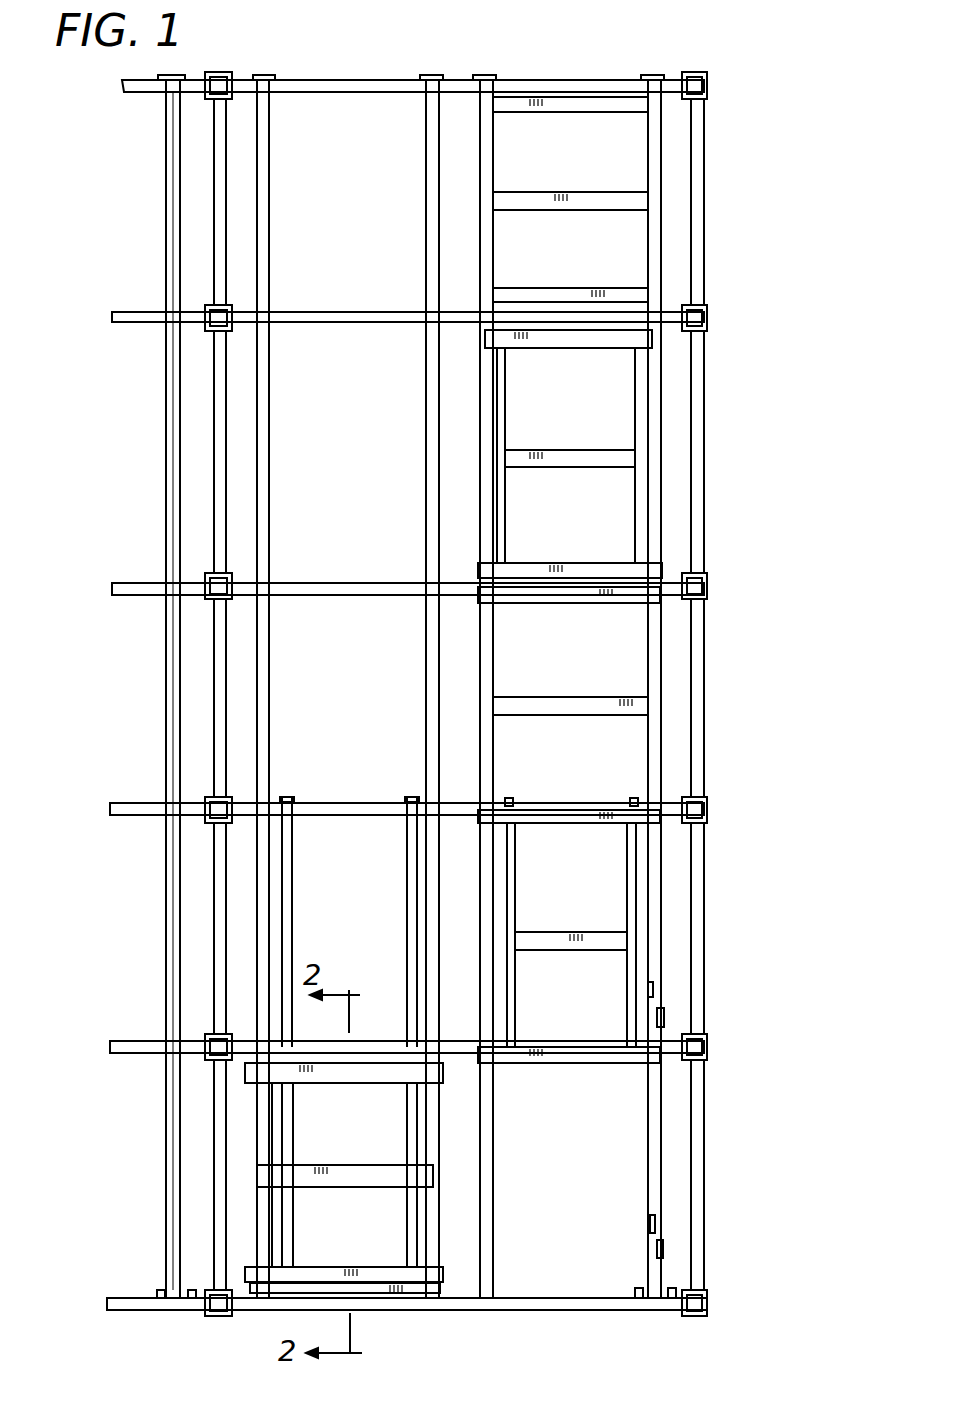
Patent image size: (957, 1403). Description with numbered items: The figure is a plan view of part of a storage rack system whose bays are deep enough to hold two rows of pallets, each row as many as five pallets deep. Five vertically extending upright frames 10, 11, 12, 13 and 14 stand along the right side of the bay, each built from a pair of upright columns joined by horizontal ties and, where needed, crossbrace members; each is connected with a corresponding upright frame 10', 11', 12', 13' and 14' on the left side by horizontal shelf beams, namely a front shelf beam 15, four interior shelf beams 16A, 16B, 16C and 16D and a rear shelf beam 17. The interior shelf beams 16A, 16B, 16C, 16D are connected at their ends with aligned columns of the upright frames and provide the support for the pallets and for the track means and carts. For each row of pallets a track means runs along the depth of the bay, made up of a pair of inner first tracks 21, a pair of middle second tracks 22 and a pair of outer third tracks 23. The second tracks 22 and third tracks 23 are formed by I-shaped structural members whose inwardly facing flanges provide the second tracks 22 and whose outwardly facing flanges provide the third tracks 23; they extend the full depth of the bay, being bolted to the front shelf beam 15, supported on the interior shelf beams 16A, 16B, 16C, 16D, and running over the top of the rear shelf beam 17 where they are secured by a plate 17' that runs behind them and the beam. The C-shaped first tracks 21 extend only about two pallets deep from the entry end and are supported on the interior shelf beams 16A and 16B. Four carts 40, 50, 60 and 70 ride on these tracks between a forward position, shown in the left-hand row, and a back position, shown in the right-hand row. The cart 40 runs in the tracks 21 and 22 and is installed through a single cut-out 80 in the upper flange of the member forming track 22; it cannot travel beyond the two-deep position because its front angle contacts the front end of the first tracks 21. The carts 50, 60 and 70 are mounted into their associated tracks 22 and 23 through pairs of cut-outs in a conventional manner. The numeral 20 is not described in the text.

The upright frame 10 is at (728, 1175).
The upright frame 10' is at (155, 1175).
The upright frame 11 is at (744, 928).
The upright frame 11' is at (159, 928).
The upright frame 12 is at (736, 698).
The upright frame 12' is at (157, 698).
The upright frame 13 is at (739, 452).
The upright frame 13' is at (150, 452).
The upright frame 14 is at (742, 202).
The upright frame 14' is at (157, 202).
The front shelf beam 15 is at (560, 1310).
The interior shelf beam 16A is at (127, 1041).
The interior shelf beam 16B is at (364, 803).
The interior shelf beam 16C is at (399, 583).
The interior shelf beam 16D is at (374, 312).
The rear shelf beam 17 is at (502, 68).
The plate 17' is at (225, 61).
The vertical support post 20 is at (166, 665).
The first track 21 is at (633, 799).
The second track 22 is at (269, 508).
The third track 23 is at (257, 482).
The cart 40 is at (671, 866).
The cart 50 is at (671, 645).
The cart 60 is at (670, 395).
The cart 70 is at (672, 268).
The cut-out 80 is at (650, 1229).